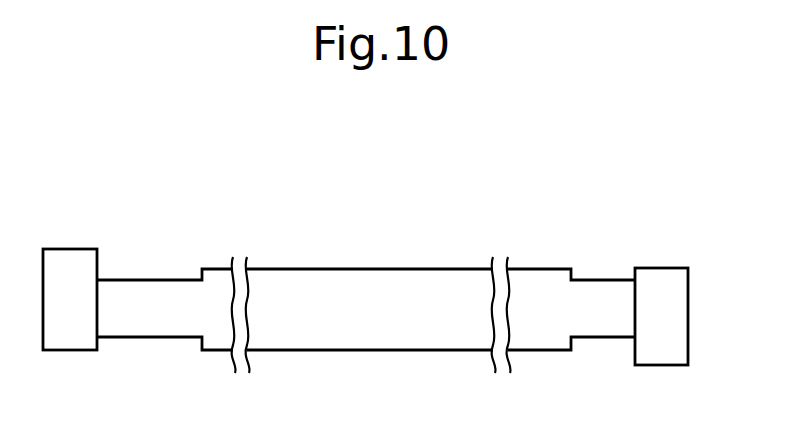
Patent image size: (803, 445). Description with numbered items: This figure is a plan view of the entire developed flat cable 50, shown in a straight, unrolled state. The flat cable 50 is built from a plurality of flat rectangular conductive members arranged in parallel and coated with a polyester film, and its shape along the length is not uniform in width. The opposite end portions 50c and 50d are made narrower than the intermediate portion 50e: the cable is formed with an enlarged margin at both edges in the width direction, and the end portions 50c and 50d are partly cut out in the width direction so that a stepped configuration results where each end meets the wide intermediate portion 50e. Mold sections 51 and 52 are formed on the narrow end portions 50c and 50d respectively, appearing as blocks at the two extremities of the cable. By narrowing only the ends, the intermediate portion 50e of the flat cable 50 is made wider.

The flat cable 50 is at (371, 302).
The end portion 50c is at (157, 292).
The end portion 50d is at (606, 287).
The intermediate portion 50e is at (360, 337).
The mold section 51 is at (77, 257).
The mold section 52 is at (665, 280).